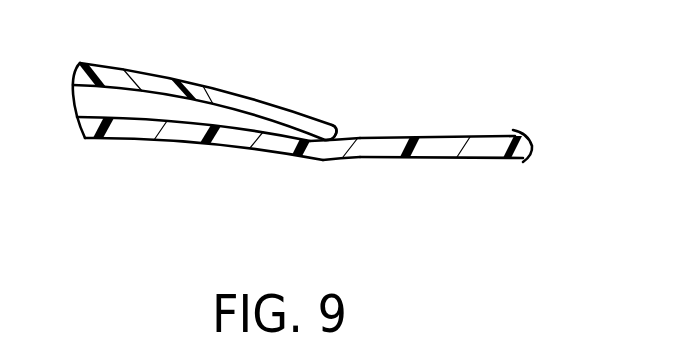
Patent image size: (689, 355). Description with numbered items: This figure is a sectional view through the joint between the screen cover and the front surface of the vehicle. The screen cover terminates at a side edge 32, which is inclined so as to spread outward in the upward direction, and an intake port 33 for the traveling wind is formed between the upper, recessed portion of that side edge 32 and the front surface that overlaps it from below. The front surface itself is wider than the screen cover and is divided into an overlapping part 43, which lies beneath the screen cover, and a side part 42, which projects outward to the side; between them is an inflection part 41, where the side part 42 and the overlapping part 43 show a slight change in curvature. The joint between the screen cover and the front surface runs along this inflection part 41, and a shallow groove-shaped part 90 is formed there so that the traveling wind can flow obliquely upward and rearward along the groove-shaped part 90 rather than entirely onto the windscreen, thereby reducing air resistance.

The side edge 32 is at (218, 89).
The intake port 33 is at (283, 108).
The groove-shaped part 90 is at (340, 131).
The inflection part 41 is at (317, 160).
The side part 42 is at (425, 158).
The overlapping part 43 is at (185, 139).